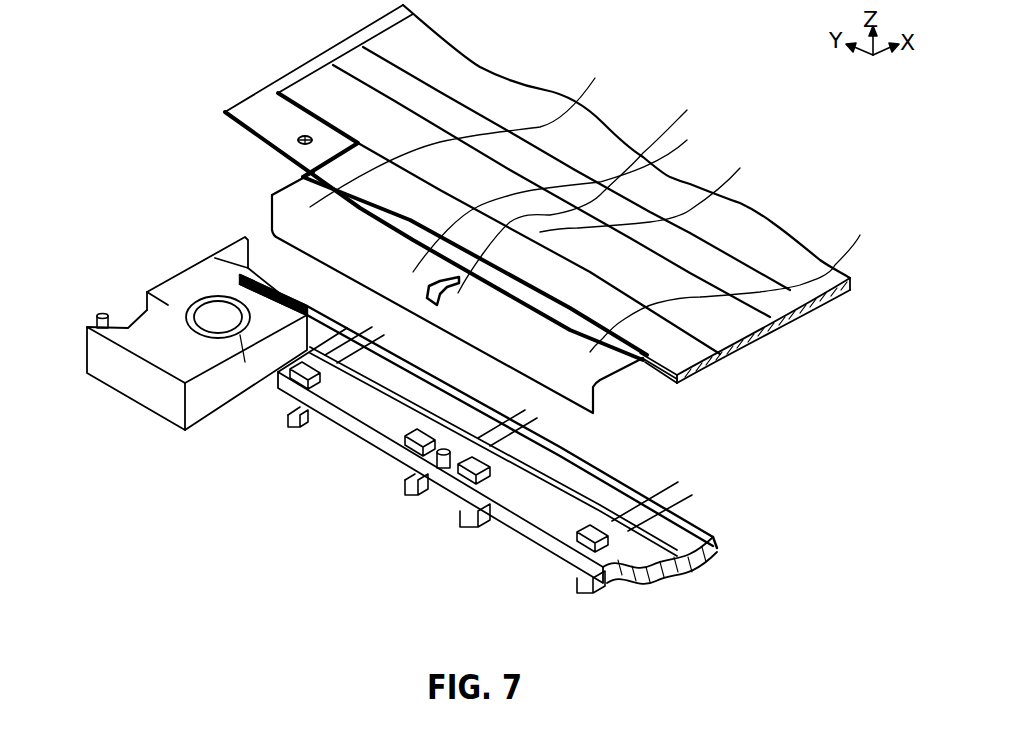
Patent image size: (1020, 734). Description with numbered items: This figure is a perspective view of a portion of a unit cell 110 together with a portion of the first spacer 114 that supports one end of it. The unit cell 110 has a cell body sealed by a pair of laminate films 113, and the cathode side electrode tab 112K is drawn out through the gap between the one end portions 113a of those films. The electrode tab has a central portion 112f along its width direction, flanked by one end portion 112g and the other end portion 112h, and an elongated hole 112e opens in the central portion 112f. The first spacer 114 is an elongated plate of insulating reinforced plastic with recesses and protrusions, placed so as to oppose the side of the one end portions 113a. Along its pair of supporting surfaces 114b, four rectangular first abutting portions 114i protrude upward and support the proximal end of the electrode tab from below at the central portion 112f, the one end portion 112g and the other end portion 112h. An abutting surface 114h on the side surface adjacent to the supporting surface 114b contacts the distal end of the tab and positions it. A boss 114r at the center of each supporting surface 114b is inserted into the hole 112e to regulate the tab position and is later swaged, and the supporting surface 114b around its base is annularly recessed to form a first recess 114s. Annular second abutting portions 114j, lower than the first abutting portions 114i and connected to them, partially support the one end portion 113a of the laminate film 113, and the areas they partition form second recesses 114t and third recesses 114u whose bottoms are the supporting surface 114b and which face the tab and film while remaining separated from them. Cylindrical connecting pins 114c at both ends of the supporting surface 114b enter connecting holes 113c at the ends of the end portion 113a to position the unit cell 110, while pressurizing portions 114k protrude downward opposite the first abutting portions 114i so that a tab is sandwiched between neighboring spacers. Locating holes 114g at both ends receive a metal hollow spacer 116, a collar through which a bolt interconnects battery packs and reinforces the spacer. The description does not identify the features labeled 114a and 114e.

The unit cell 110 is at (632, 96).
The other end portion 112h is at (476, 130).
The cathode side electrode tab 112K is at (597, 187).
The hole 112e is at (572, 197).
The central portion 112f is at (663, 186).
The one end portion 112g is at (751, 281).
The laminate film 113 is at (225, 112).
The one end portion 113a is at (682, 350).
The connecting hole 113c is at (304, 135).
The first spacer 114 is at (138, 407).
The fin plate 114a is at (180, 282).
The supporting surface 114b is at (428, 406).
The connecting pin 114c is at (245, 362).
The pin 114e is at (99, 317).
The locating hole 114g is at (180, 280).
The abutting surface 114h is at (495, 505).
The first abutting portion 114i is at (290, 425).
The second abutting portion 114j is at (556, 445).
The pressurizing portion 114k is at (298, 428).
The boss 114r is at (425, 478).
The first recess 114s is at (440, 470).
The second recess 114t is at (312, 392).
The third recess 114u is at (385, 372).
The hollow spacer 116 is at (185, 334).